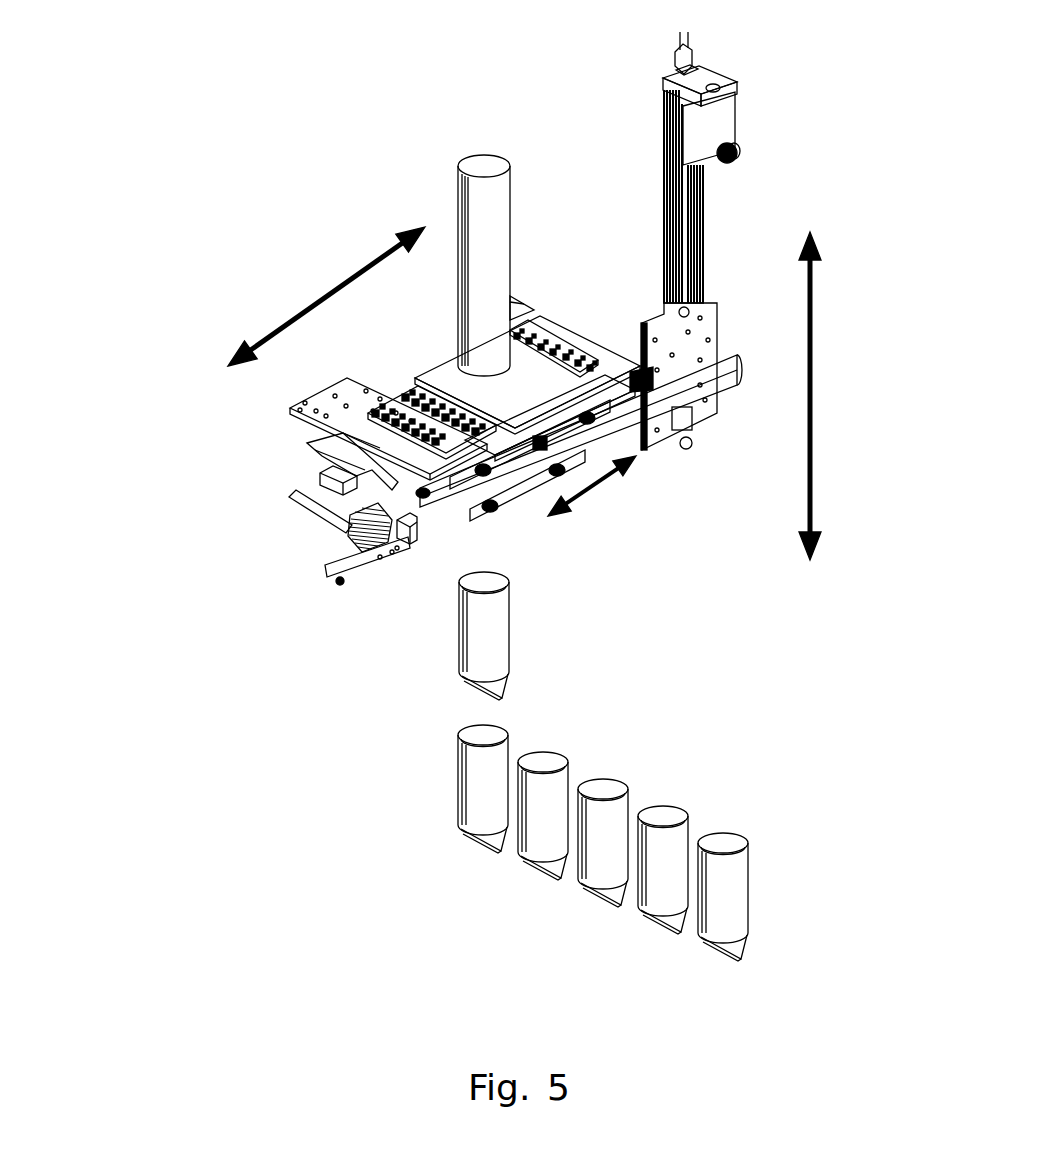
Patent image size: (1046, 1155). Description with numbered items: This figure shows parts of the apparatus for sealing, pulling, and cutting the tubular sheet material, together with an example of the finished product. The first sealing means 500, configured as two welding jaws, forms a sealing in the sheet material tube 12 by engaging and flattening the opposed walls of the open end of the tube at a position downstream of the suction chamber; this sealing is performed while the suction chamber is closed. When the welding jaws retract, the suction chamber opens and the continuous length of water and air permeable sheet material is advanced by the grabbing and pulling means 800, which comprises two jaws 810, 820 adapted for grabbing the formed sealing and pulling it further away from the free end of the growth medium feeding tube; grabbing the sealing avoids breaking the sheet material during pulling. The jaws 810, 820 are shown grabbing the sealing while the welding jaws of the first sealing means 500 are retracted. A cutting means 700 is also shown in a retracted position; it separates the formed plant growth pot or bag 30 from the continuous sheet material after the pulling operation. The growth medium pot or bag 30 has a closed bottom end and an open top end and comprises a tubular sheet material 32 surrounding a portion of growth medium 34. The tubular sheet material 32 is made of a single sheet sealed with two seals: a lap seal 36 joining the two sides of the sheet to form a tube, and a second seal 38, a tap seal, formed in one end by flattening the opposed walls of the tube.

The sheet material tube 12 is at (483, 218).
The first sealing means 500 is at (340, 400).
The jaw 820 is at (428, 374).
The cutting means 700 is at (358, 464).
The grabbing and pulling means 800 is at (695, 327).
The jaw 810 is at (548, 420).
The plant growth pot or bag 30 is at (723, 888).
The tubular sheet material 32 is at (505, 661).
The growth medium 34 is at (512, 592).
The lap seal 36 is at (457, 640).
The seal 38 is at (505, 688).